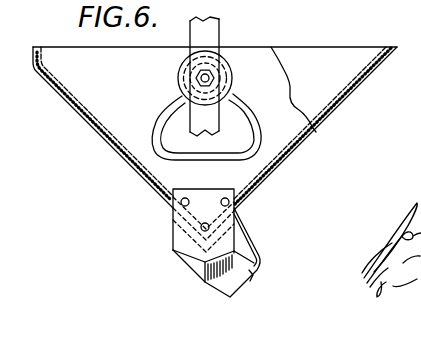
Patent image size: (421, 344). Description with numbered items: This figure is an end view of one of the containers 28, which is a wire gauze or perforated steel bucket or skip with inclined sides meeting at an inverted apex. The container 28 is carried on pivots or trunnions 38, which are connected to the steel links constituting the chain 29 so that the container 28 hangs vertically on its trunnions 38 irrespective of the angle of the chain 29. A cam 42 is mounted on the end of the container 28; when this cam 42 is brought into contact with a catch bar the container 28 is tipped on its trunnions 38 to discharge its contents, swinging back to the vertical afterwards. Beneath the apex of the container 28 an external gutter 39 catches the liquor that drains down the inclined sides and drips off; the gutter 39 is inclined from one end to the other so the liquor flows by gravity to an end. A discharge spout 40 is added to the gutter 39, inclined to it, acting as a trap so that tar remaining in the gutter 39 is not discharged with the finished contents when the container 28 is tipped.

The container 28 is at (252, 58).
The chain 29 is at (213, 33).
The pivots or trunnions 38 is at (203, 78).
The cam 42 is at (242, 117).
The external gutter 39 is at (175, 242).
The discharge spout 40 is at (238, 278).